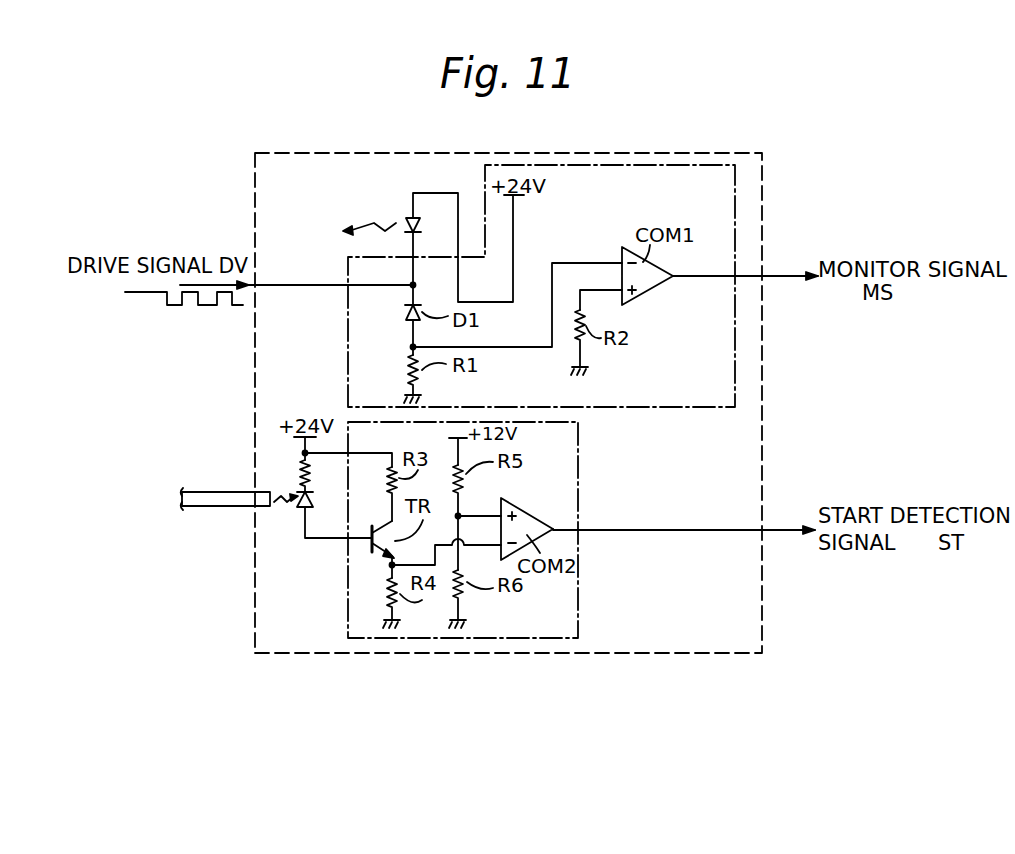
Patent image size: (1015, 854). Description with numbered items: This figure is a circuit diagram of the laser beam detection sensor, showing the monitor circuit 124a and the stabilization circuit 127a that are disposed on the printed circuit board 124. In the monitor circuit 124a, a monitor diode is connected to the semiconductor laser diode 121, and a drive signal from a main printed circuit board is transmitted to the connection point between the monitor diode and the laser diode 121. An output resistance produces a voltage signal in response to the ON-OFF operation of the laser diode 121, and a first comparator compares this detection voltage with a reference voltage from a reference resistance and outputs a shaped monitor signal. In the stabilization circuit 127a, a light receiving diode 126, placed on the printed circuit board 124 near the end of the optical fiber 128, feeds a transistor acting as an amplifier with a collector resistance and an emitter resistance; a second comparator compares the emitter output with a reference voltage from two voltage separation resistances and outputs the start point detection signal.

The semiconductor laser diode 121 is at (400, 216).
The printed circuit board 124 is at (762, 370).
The monitor circuit 124a is at (728, 183).
The light receiving diode 126 is at (300, 511).
The stabilization circuit 127a is at (578, 482).
The optical fiber 128 is at (212, 507).